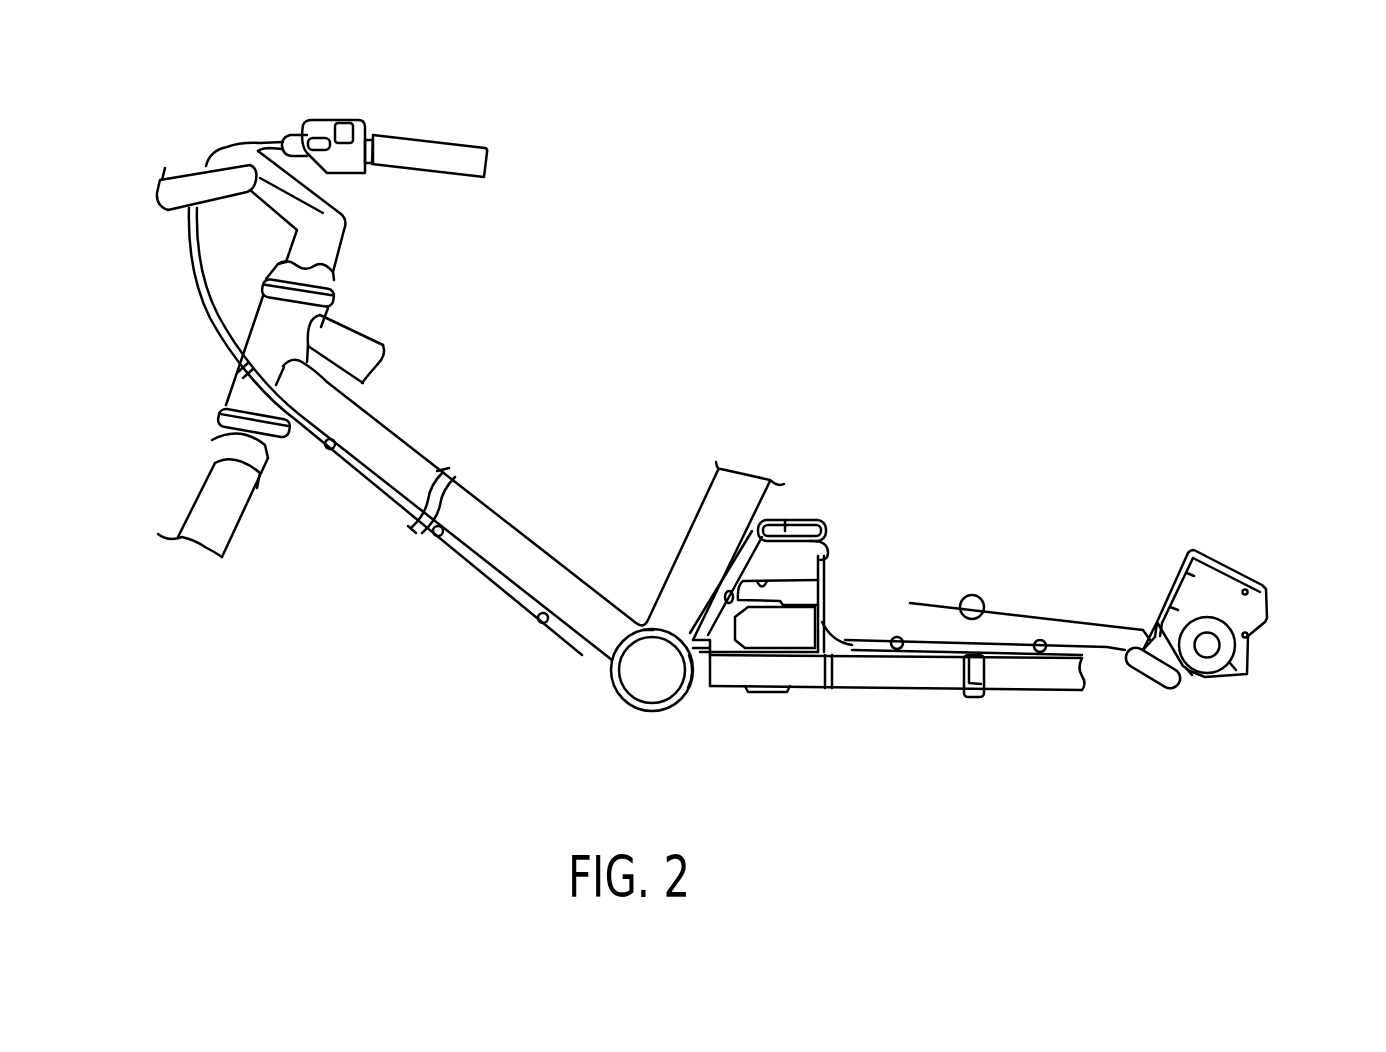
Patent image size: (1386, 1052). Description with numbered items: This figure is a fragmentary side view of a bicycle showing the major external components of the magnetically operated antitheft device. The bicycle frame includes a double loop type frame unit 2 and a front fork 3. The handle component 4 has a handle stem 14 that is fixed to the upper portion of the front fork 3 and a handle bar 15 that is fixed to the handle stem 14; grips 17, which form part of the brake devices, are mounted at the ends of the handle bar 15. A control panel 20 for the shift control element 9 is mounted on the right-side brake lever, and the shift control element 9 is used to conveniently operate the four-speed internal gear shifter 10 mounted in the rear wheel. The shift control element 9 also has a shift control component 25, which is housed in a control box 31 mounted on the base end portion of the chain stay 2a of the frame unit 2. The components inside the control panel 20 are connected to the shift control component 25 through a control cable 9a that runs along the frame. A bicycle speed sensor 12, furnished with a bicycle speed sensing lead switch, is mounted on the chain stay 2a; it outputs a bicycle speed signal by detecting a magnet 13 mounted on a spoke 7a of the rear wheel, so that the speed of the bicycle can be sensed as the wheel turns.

The frame unit 2 is at (562, 545).
The chain stay 2a is at (855, 680).
The front fork 3 is at (222, 510).
The handle component 4 is at (211, 132).
The spoke 7a is at (1045, 617).
The shift control element 9 is at (348, 117).
The control cable 9a is at (378, 505).
The internal gear shifter 10 is at (1274, 620).
The bicycle speed sensor 12 is at (985, 670).
The magnet 13 is at (975, 598).
The handle stem 14 is at (326, 238).
The handle bar 15 is at (182, 205).
The grip 17 is at (454, 152).
The control panel 20 is at (328, 100).
The shift control component 25 is at (846, 537).
The control box 31 is at (836, 576).